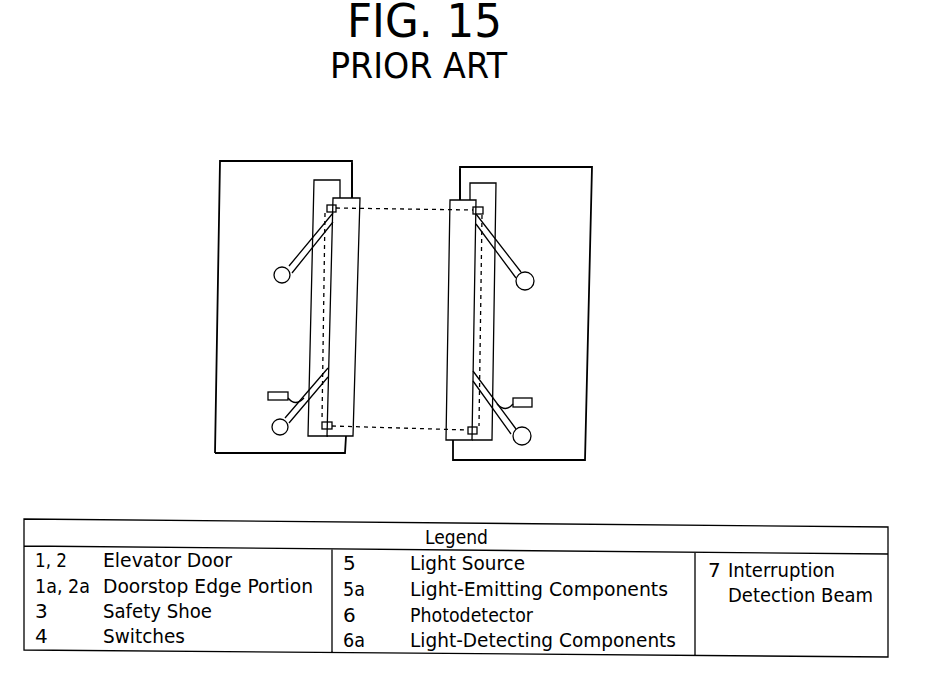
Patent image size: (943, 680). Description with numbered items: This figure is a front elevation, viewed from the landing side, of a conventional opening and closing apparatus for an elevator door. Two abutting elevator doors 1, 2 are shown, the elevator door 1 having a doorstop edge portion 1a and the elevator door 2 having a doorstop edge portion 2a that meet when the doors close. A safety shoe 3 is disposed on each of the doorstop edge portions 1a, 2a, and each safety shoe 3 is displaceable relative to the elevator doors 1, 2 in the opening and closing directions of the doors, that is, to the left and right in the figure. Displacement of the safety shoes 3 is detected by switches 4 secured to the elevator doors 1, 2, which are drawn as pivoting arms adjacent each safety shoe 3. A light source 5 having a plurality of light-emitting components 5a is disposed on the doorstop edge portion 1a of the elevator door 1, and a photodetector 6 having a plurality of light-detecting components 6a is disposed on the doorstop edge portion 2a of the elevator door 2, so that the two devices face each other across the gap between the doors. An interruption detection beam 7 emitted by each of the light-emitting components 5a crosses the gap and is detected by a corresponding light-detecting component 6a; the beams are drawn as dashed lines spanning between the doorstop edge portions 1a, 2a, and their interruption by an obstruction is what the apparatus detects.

The elevator door 1 is at (268, 160).
The elevator door 2 is at (545, 166).
The doorstop edge portion 1a is at (355, 162).
The doorstop edge portion 2a is at (458, 182).
The safety shoe 3 is at (360, 198).
The switches 4 is at (258, 400).
The light source 5 is at (324, 178).
The light-emitting components 5a is at (327, 208).
The photodetector 6 is at (489, 183).
The light-detecting components 6a is at (484, 210).
The interruption detection beam 7 is at (388, 213).